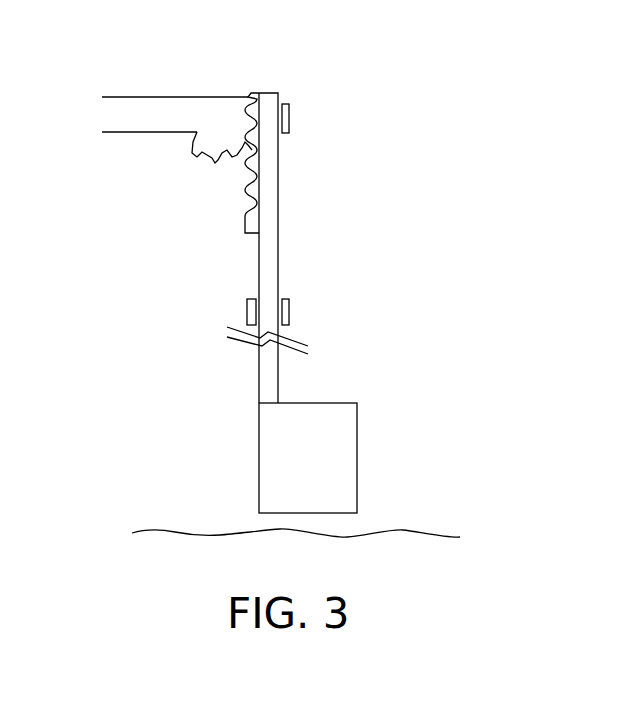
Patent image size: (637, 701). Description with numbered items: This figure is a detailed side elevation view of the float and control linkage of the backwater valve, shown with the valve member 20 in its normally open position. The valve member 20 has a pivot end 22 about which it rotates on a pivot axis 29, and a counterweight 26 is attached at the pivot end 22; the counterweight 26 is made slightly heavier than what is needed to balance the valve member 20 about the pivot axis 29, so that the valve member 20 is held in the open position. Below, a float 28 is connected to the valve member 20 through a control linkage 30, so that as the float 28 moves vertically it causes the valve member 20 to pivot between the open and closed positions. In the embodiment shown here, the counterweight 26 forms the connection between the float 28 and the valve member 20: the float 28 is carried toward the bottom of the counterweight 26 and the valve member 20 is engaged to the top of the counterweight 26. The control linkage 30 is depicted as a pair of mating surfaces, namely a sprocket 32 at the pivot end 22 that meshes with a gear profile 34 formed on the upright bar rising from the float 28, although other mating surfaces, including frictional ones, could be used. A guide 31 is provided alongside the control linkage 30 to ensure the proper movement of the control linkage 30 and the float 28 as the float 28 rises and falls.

The valve member 20 is at (130, 105).
The pivot end 22 is at (198, 96).
The counterweight 26 is at (259, 287).
The float 28 is at (357, 459).
The pivot axis 29 is at (218, 121).
The control linkage 30 is at (279, 248).
The guide 31 is at (289, 122).
The sprocket 32 is at (217, 163).
The gear profile 34 is at (248, 199).